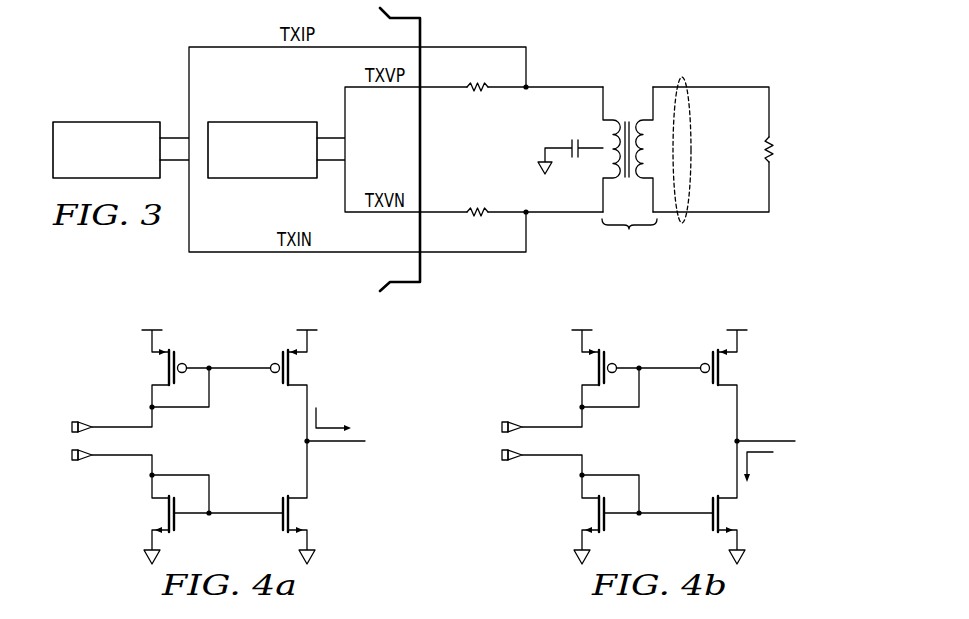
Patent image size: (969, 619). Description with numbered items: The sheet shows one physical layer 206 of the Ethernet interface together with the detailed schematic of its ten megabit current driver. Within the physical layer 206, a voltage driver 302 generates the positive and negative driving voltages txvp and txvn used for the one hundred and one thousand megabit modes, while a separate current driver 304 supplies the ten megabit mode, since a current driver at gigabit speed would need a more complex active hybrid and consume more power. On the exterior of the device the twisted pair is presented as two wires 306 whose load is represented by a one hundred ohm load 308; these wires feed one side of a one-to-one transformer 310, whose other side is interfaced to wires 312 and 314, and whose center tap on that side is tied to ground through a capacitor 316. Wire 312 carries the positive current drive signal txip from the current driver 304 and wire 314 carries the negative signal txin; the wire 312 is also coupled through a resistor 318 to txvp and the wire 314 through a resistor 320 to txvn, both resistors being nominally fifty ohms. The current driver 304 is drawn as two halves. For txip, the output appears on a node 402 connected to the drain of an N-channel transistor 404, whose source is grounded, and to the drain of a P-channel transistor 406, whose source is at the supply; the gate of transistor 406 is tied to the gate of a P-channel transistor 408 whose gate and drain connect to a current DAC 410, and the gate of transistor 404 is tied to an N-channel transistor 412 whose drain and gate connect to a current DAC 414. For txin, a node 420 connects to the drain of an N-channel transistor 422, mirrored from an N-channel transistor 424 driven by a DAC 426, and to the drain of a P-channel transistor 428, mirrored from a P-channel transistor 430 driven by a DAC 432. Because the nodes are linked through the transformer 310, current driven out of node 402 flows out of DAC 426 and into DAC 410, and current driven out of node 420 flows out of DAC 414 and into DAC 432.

In FIG. 3, the physical layer 206 is at (421, 33).
In FIG. 3, the voltage driver 302 is at (263, 122).
In FIG. 3, the current driver 304 is at (107, 122).
In FIG. 4a, the current driver 304 is at (221, 447).
In FIG. 4b, the current driver 304 is at (651, 447).
In FIG. 3, the two wires 306 is at (683, 77).
In FIG. 3, the 100 ohm load 308 is at (763, 146).
In FIG. 3, the 1:1 transformer 310 is at (629, 163).
In FIG. 3, the wire 312 is at (553, 87).
In FIG. 3, the wire 314 is at (550, 212).
In FIG. 3, the capacitor 316 is at (575, 140).
In FIG. 3, the resistor 318 is at (476, 94).
In FIG. 3, the resistor 320 is at (478, 206).
In FIG. 4a, the node 402 is at (312, 443).
In FIG. 4a, the N-channel transistor 404 is at (276, 501).
In FIG. 4a, the P-channel transistor 406 is at (276, 379).
In FIG. 4a, the P-channel transistor 408 is at (183, 359).
In FIG. 4a, the current DAC 410 is at (78, 420).
In FIG. 4a, the N-channel transistor 412 is at (183, 528).
In FIG. 4a, the current DAC 414 is at (80, 463).
In FIG. 4b, the node 420 is at (784, 427).
In FIG. 4b, the N-channel transistor 422 is at (692, 502).
In FIG. 4b, the N-channel transistor 424 is at (620, 530).
In FIG. 4b, the DAC 426 is at (524, 480).
In FIG. 4b, the P-channel transistor 428 is at (695, 395).
In FIG. 4b, the P-channel transistor 430 is at (624, 371).
In FIG. 4b, the DAC 432 is at (524, 407).